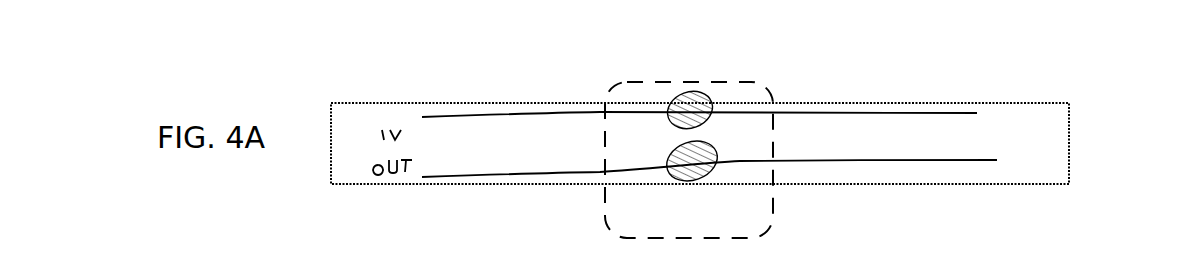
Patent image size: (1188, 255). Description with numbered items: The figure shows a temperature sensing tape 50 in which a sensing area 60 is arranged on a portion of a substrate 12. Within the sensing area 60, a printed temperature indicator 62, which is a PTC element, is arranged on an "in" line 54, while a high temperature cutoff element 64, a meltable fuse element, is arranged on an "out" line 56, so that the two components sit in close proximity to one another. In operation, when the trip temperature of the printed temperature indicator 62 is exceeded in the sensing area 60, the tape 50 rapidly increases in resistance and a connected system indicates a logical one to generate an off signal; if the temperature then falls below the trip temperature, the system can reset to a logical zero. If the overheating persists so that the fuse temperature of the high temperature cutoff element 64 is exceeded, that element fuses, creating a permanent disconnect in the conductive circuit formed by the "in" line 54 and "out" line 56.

The tape 50 is at (343, 81).
The substrate 12 is at (1069, 153).
The "in" line 54 is at (478, 118).
The "out" line 56 is at (457, 175).
The sensing area 60 is at (773, 200).
The printed temperature indicator 62 is at (667, 103).
The high temperature cutoff element 64 is at (668, 172).